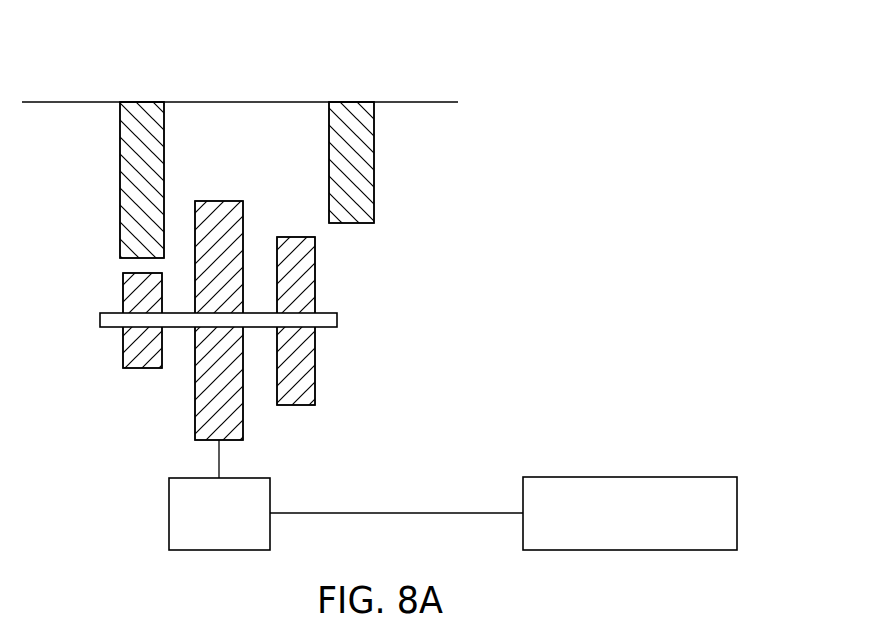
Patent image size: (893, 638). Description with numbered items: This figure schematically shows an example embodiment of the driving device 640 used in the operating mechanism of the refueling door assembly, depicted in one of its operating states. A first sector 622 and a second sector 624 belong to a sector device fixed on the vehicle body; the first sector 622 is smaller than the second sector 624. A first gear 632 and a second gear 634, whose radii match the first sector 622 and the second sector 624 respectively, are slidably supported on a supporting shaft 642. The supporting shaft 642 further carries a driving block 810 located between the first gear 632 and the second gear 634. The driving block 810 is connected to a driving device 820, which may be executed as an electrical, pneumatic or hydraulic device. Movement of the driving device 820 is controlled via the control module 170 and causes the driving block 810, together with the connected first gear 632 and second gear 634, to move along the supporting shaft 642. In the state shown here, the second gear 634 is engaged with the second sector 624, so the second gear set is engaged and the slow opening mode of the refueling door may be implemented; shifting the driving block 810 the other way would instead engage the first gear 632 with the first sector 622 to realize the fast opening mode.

The driving device 640 is at (720, 38).
The second sector 624 is at (164, 121).
The first sector 622 is at (374, 121).
The driving block 810 is at (243, 218).
The first gear 632 is at (315, 250).
The second gear 634 is at (123, 290).
The supporting shaft 642 is at (100, 319).
The driving device 820 is at (240, 526).
The control module 170 is at (651, 528).